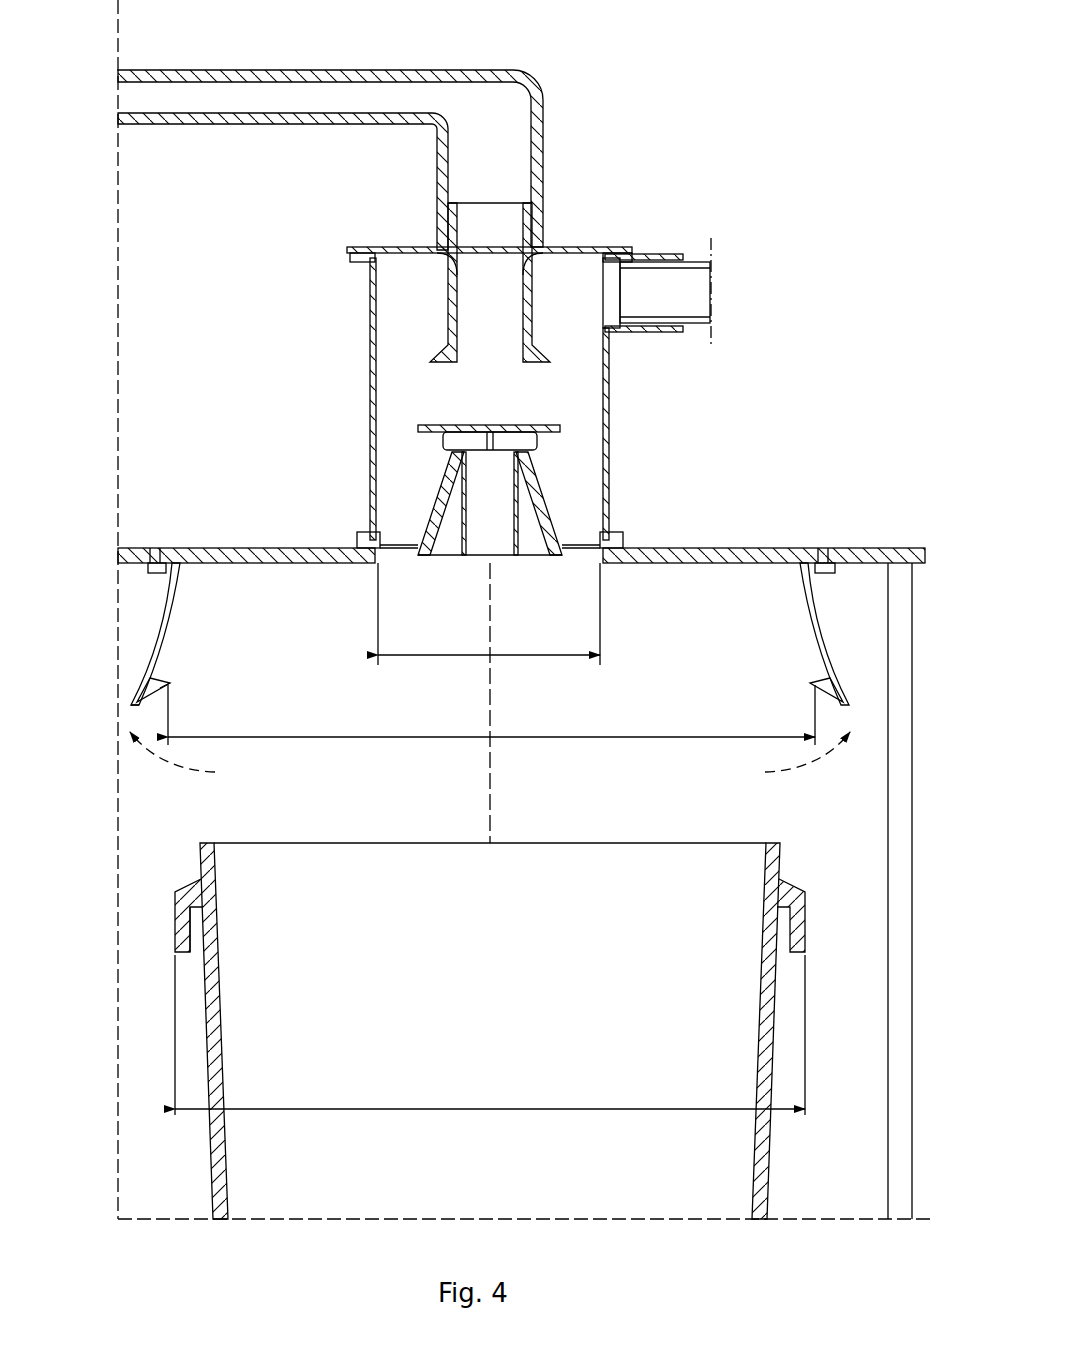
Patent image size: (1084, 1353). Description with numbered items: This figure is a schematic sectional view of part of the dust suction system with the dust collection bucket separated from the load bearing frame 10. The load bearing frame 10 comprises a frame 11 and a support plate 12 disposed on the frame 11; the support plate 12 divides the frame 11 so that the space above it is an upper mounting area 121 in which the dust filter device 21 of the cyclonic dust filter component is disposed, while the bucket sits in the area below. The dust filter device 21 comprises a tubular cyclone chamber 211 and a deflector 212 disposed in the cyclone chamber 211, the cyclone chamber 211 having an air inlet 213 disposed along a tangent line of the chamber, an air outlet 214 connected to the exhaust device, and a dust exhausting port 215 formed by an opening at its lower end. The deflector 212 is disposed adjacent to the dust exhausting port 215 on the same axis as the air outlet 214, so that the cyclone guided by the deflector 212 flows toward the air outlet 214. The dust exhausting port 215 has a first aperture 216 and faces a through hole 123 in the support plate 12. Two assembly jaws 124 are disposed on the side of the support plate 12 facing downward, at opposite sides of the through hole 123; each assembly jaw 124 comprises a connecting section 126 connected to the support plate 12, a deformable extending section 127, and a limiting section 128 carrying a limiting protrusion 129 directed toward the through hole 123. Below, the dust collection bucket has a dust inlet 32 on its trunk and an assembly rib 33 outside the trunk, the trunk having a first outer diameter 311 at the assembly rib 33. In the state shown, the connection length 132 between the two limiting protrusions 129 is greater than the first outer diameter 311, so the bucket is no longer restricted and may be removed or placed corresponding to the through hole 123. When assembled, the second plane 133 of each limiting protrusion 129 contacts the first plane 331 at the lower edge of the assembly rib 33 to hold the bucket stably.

The load bearing frame 10 is at (886, 770).
The frame 11 is at (897, 945).
The support plate 12 is at (215, 548).
The dust filter device 21 is at (580, 244).
The cyclone chamber 211 is at (610, 398).
The deflector 212 is at (432, 497).
The air inlet 213 is at (607, 305).
The air outlet 214 is at (456, 340).
The dust exhausting port 215 is at (598, 565).
The first aperture 216 is at (489, 614).
The upper mounting area 121 is at (710, 484).
The through hole 123 is at (366, 565).
The assembly jaws 124 is at (832, 626).
The connecting section 126 is at (832, 566).
The extending section 127 is at (164, 610).
The limiting section 128 is at (140, 692).
The limiting protrusion 129 is at (168, 700).
The connection length 132 is at (490, 728).
The second plane 133 is at (152, 685).
The dust inlet 32 is at (305, 843).
The assembly rib 33 is at (172, 912).
The first plane 331 is at (182, 955).
The first outer diameter 311 is at (490, 1035).